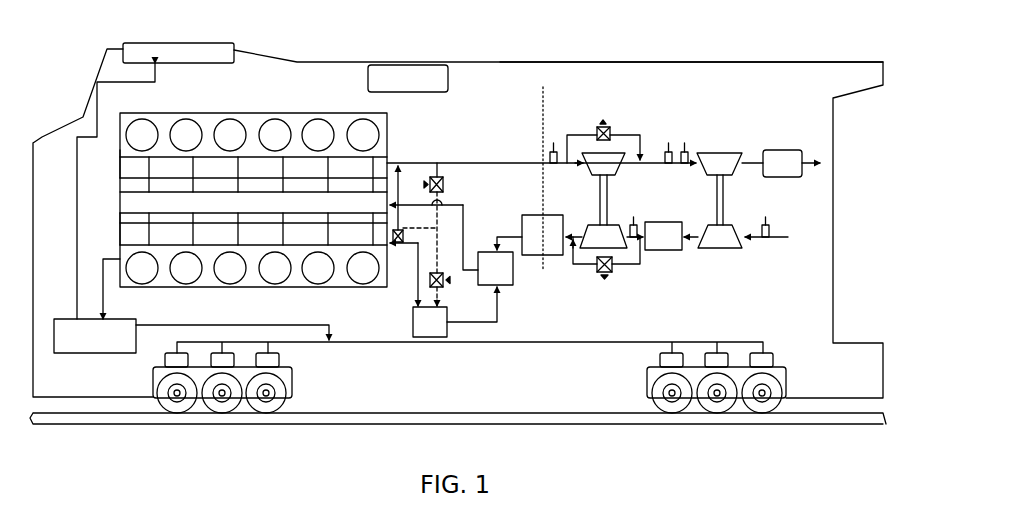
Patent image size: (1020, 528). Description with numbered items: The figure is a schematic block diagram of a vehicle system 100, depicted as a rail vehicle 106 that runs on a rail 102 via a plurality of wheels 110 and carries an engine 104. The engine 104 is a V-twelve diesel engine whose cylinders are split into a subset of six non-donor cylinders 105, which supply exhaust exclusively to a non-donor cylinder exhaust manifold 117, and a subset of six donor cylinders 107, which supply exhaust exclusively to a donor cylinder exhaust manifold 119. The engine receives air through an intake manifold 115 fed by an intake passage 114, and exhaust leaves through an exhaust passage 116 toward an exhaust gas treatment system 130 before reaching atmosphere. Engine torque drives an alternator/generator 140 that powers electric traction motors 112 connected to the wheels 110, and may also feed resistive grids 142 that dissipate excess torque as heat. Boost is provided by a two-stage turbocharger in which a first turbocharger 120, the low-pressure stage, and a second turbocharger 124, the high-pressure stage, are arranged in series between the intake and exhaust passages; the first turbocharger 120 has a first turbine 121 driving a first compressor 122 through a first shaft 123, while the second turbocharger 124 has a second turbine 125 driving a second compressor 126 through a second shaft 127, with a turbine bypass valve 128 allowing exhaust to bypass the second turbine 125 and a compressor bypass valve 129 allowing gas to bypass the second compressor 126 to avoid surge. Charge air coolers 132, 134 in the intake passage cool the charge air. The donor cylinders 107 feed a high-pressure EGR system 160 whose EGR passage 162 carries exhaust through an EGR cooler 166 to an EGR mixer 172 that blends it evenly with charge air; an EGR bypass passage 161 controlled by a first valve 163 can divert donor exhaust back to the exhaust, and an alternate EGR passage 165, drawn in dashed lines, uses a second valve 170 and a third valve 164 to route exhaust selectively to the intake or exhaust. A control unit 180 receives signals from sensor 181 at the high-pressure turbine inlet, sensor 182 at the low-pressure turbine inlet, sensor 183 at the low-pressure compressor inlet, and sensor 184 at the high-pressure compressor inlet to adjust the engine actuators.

The vehicle system 100 is at (768, 43).
The rail 102 is at (832, 425).
The engine 104 is at (233, 197).
The non-donor cylinders 105 is at (232, 118).
The rail vehicle 106 is at (673, 60).
The donor cylinders 107 is at (233, 288).
The wheels 110 is at (485, 377).
The electric traction motors 112 is at (280, 357).
The intake passage 114 is at (757, 240).
The intake manifold 115 is at (252, 202).
The exhaust passage 116 is at (497, 162).
The non-donor cylinder exhaust manifold 117 is at (119, 165).
The donor cylinder exhaust manifold 119 is at (119, 235).
The first turbocharger 120 is at (732, 218).
The first turbine 121 is at (719, 164).
The first compressor 122 is at (722, 262).
The first shaft 123 is at (724, 213).
The second turbocharger 124 is at (621, 266).
The second turbine 125 is at (603, 164).
The second compressor 126 is at (603, 236).
The second shaft 127 is at (609, 212).
The turbine bypass valve 128 is at (612, 129).
The compressor bypass valve 129 is at (596, 268).
The exhaust gas treatment system 130 is at (781, 163).
The charge air cooler 132 is at (662, 236).
The charge air cooler 134 is at (539, 235).
The alternator/generator 140 is at (191, 306).
The resistive grids 142 is at (227, 43).
The EGR system 160 is at (512, 311).
The EGR bypass passage 161 is at (400, 182).
The EGR passage 162 is at (417, 262).
The first valve 163 is at (404, 230).
The third valve 164 is at (443, 180).
The alternate EGR passage 165 is at (438, 232).
The EGR cooler 166 is at (430, 322).
The second valve 170 is at (445, 286).
The EGR mixer 172 is at (451, 242).
The controller / sensor 180 is at (687, 150).
The sensor 181 is at (555, 146).
The sensor 182 is at (668, 146).
The sensor 183 is at (764, 219).
The sensor 184 is at (634, 219).